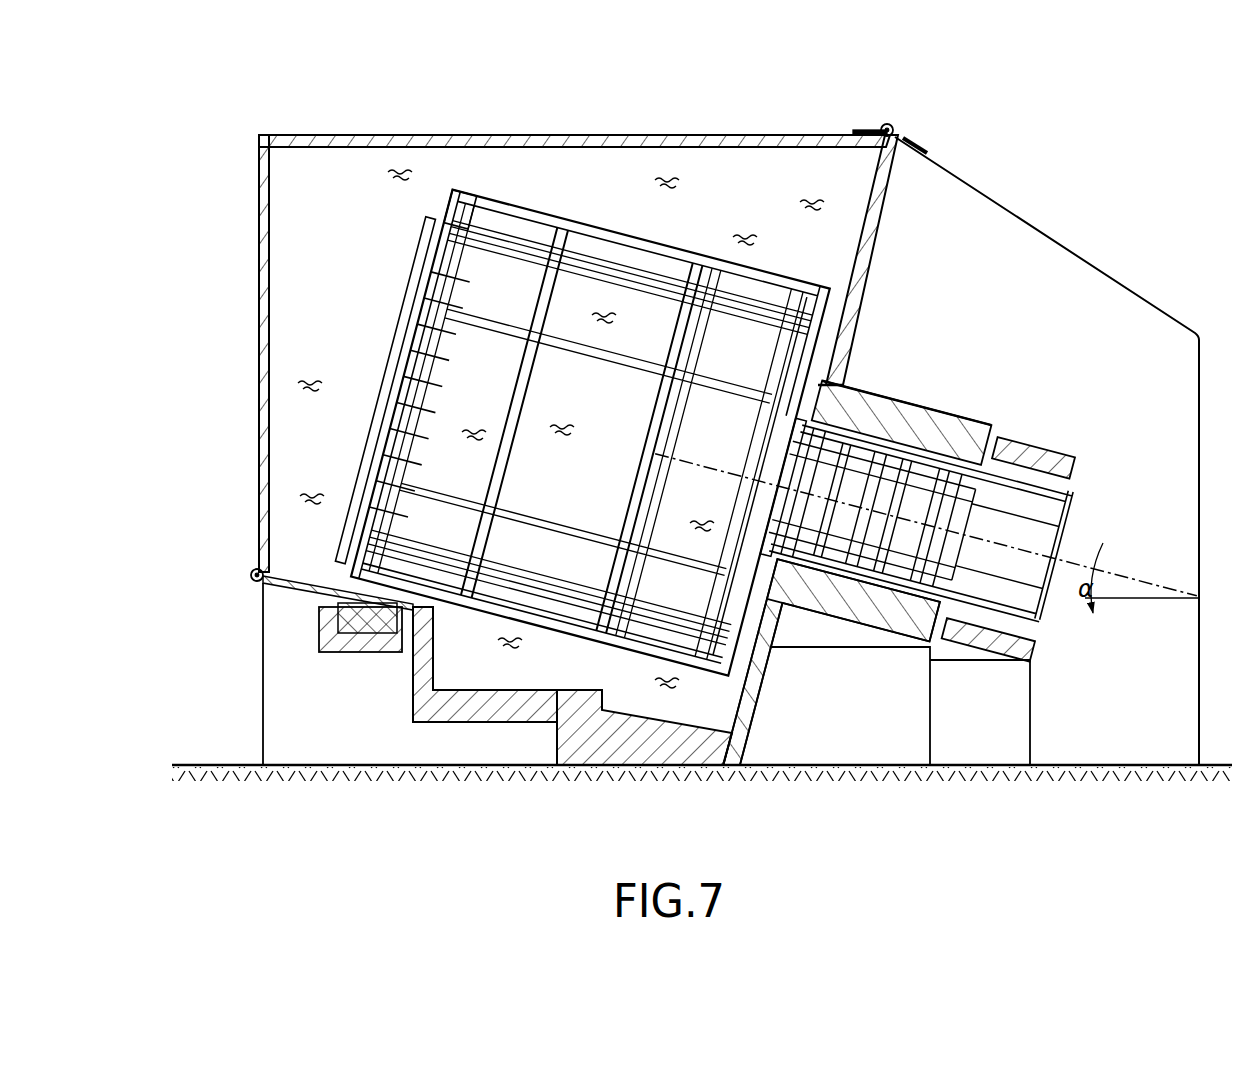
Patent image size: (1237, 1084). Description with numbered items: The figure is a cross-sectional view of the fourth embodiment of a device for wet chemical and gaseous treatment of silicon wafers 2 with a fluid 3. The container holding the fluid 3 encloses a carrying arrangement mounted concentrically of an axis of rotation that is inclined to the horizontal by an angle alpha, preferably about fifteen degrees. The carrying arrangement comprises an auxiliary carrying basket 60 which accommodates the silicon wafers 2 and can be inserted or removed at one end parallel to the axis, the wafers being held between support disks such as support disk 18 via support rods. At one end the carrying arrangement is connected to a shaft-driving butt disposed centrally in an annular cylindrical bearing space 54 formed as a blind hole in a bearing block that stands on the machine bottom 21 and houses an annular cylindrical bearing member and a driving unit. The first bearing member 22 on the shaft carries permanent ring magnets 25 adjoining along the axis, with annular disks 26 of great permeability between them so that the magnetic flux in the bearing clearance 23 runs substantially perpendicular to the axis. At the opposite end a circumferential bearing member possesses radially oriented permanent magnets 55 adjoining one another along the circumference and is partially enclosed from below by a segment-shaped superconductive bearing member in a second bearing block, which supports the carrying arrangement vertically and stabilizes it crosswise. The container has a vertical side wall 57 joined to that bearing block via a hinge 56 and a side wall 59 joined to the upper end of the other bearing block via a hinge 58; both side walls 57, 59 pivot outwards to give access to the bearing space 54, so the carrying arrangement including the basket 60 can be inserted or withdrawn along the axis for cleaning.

The silicon wafers 2 is at (523, 392).
The fluid 3 is at (668, 185).
The support disk 18 is at (803, 348).
The machine bottom 21 is at (437, 768).
The first bearing member 22 is at (934, 488).
The bearing clearance 23 is at (865, 386).
The permanent ring magnets 25 is at (893, 496).
The annular disks 26 is at (833, 500).
The bearing space 54 is at (1045, 497).
The permanent magnets 55 is at (428, 398).
The hinge 56 is at (250, 575).
The vertical side wall 57 is at (265, 378).
The hinge 58 is at (887, 123).
The side wall 59 is at (741, 137).
The auxiliary carrying basket 60 is at (407, 271).